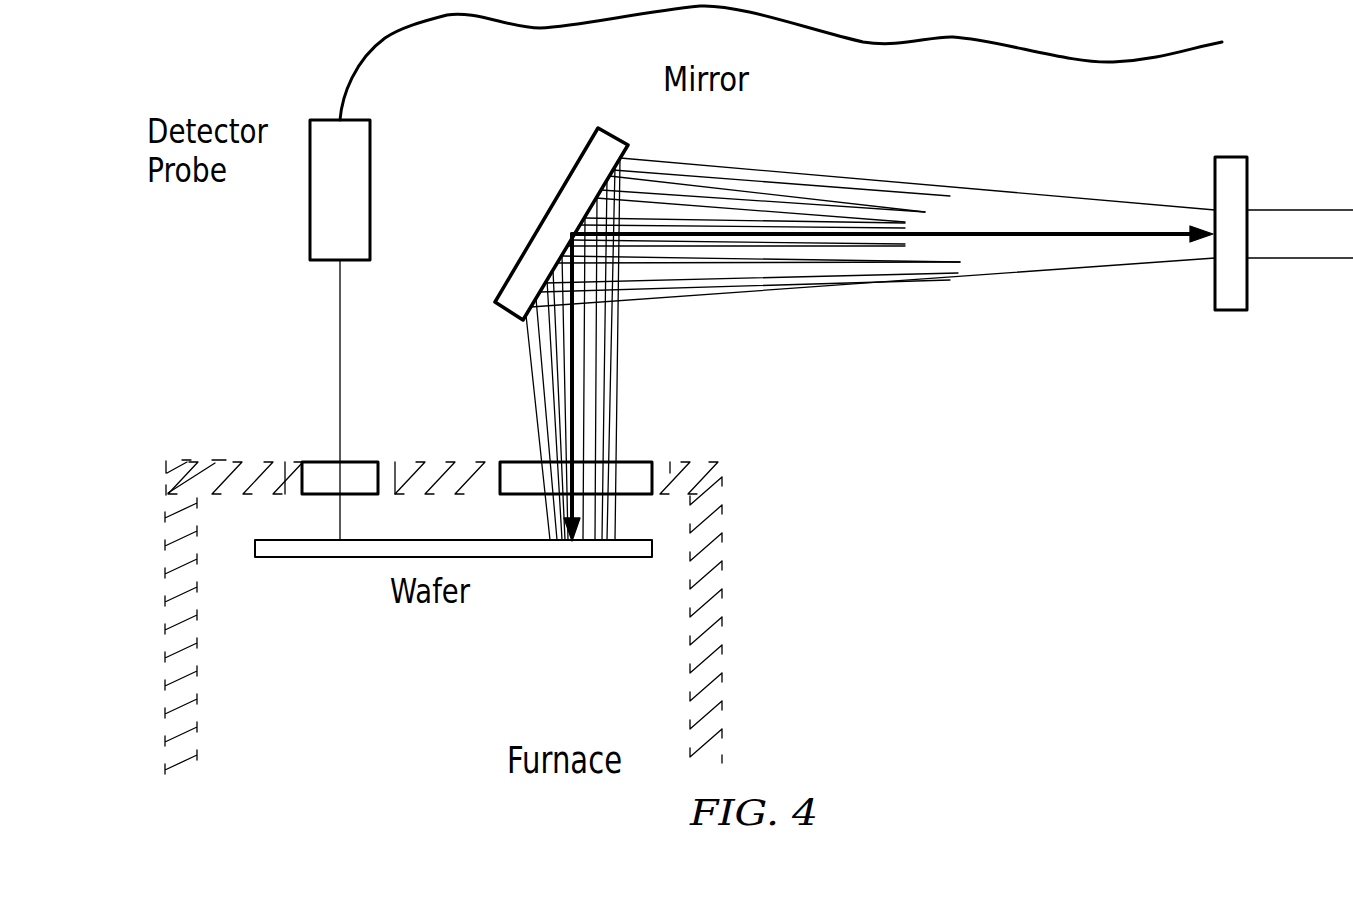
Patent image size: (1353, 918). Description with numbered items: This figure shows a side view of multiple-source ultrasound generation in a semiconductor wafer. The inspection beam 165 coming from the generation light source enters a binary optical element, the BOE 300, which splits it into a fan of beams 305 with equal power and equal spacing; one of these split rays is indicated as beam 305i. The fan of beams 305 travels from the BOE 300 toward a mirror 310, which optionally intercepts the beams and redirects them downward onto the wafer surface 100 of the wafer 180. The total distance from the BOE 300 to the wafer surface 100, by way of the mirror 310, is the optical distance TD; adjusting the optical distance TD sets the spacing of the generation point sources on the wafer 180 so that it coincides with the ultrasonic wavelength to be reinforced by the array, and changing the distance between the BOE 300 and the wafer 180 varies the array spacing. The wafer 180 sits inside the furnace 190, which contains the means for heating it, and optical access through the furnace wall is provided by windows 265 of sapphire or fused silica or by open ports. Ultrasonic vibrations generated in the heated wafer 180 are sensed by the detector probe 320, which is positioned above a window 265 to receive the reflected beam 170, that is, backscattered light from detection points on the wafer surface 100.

The wafer surface 100 is at (375, 540).
The inspection beam 165 is at (1275, 203).
The reflected beam 170 is at (343, 365).
The wafer 180 is at (594, 583).
The furnace 190 is at (690, 700).
The windows 265 is at (365, 462).
The binary optical element (BOE) 300 is at (1225, 312).
The fan of beams 305 is at (975, 288).
The incident rays 305i is at (945, 183).
The mirror 310 is at (624, 142).
The detector probe 320 is at (310, 195).
The optical distance TD is at (1080, 237).